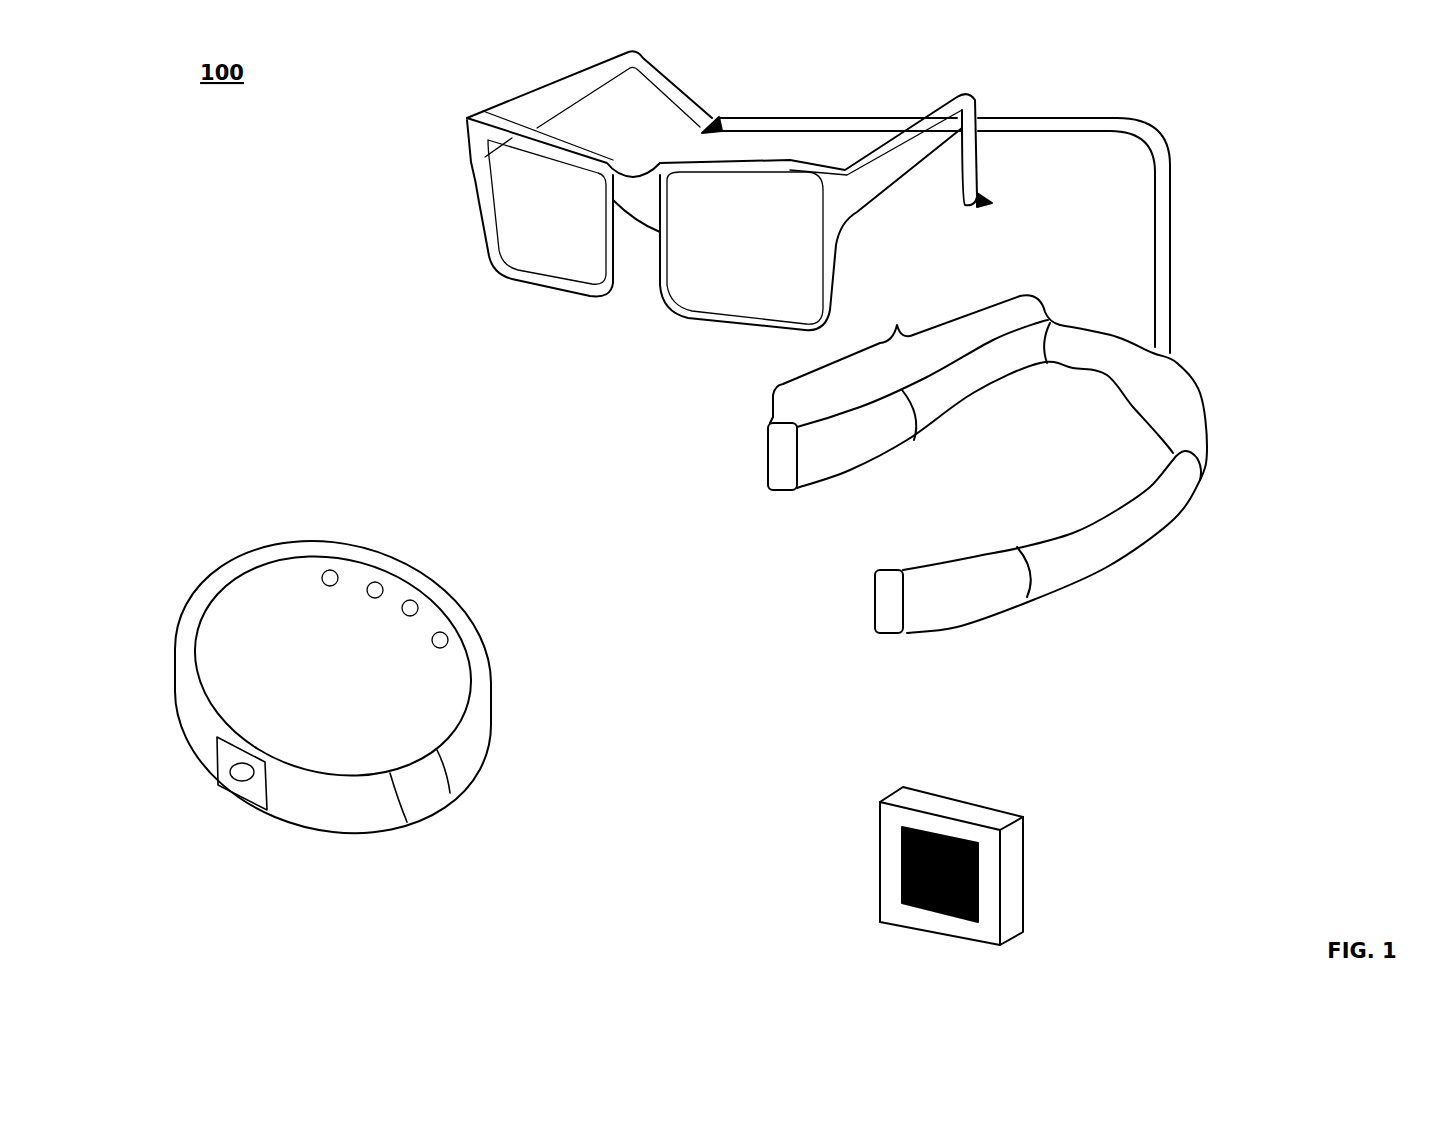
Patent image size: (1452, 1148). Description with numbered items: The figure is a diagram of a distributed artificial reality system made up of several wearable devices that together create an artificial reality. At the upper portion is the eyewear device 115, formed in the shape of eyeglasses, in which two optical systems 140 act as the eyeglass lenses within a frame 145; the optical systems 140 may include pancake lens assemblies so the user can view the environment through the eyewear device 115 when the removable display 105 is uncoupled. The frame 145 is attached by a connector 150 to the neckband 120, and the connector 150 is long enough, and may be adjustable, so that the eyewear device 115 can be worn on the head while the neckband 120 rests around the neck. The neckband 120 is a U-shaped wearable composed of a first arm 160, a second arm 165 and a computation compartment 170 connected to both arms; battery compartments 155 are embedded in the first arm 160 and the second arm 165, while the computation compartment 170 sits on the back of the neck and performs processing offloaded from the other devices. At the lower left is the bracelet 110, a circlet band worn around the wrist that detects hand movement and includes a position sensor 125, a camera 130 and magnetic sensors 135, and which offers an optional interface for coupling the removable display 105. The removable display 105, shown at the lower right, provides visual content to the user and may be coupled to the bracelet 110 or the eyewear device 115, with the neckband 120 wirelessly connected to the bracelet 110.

The removable display 105 is at (1023, 815).
The bracelet 110 is at (533, 630).
The eyewear device 115 is at (470, 305).
The neckband 120 is at (863, 627).
The position sensor 125 is at (427, 807).
The camera 130 is at (250, 790).
The magnetic sensors 135 is at (315, 522).
The optical systems 140 is at (578, 253).
The frame 145 is at (880, 148).
The connector 150 is at (1167, 147).
The battery compartments 155 is at (943, 405).
The first arm 160 is at (1081, 427).
The second arm 165 is at (913, 637).
The computation compartment 170 is at (1159, 468).